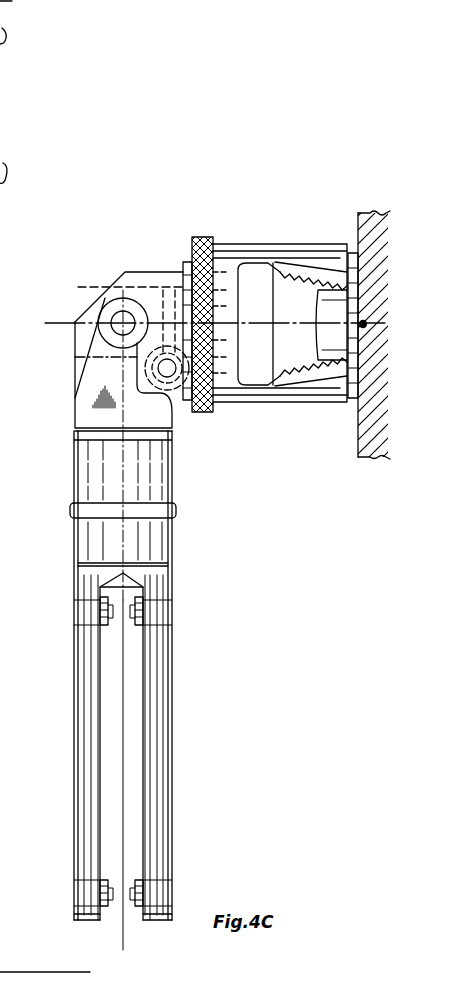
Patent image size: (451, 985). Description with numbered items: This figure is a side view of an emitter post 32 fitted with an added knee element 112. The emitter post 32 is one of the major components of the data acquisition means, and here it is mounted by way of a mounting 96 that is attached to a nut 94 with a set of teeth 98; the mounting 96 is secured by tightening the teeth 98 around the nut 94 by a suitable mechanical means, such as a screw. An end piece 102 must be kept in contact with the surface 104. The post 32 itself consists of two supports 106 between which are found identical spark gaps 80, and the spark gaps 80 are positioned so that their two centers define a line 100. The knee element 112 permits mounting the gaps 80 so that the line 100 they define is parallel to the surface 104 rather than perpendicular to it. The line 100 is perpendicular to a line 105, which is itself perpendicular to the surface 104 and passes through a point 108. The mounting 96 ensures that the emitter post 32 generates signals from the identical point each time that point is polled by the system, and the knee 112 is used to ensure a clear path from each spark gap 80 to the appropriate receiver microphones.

The emitter post 32 is at (173, 584).
The spark gaps 80 is at (137, 616).
The nut 94 is at (318, 336).
The mounting 96 is at (262, 402).
The teeth 98 is at (288, 272).
The line 100 is at (121, 933).
The end piece 102 is at (350, 406).
The surface 104 is at (352, 226).
The line 105 is at (60, 323).
The supports 106 is at (80, 782).
The point 108 is at (363, 328).
The knee element 112 is at (101, 294).